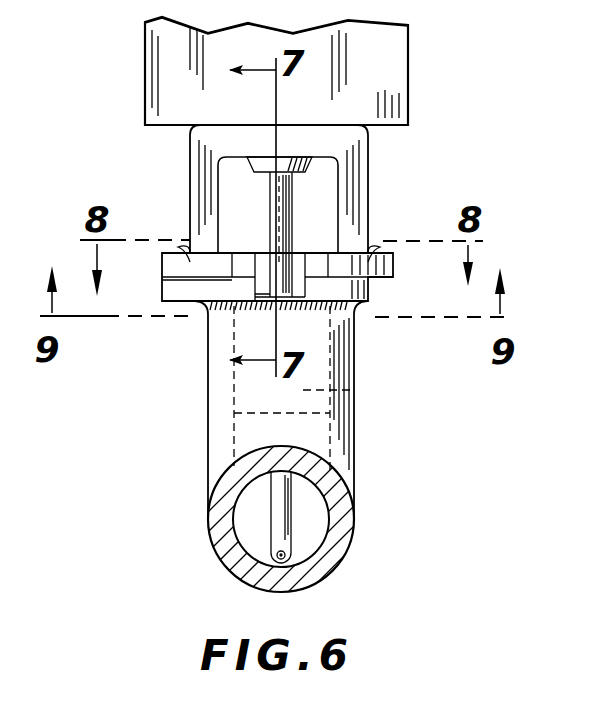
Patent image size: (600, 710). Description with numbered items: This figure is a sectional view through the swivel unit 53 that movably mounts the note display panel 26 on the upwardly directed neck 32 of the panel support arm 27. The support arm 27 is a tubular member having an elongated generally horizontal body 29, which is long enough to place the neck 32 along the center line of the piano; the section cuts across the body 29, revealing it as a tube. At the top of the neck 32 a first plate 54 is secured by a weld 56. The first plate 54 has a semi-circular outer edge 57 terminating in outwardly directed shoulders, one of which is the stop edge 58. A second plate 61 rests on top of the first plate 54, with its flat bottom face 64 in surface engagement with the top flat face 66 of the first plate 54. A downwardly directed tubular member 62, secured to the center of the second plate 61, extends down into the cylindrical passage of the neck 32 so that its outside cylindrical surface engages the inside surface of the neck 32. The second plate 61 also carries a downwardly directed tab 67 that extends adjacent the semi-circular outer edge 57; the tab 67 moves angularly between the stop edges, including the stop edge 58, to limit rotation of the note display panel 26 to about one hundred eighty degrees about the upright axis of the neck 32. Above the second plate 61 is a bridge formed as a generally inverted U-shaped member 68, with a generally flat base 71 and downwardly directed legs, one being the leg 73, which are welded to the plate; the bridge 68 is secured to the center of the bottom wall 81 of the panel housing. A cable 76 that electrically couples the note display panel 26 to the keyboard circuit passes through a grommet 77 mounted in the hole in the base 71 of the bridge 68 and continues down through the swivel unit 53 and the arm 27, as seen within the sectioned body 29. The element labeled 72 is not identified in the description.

The note display panel 26 is at (376, 71).
The panel support arm 27 is at (200, 516).
The body 29 is at (335, 548).
The neck 32 is at (208, 420).
The swivel unit 53 is at (386, 238).
The first plate 54 is at (180, 291).
The weld 56 is at (352, 320).
The semi-circular outer edge 57 is at (368, 289).
The shoulder 58 is at (258, 292).
The second plate 61 is at (200, 258).
The tubular member 62 is at (363, 397).
The flat bottom face 64 is at (236, 272).
The top flat face 66 is at (226, 279).
The tab 67 is at (292, 272).
The bridge 68 is at (188, 158).
The base 71 is at (248, 143).
The left wall 72 is at (203, 186).
The leg 73 is at (357, 183).
The cable 76 is at (291, 510).
The grommet 77 is at (291, 160).
The bottom wall 81 is at (153, 125).